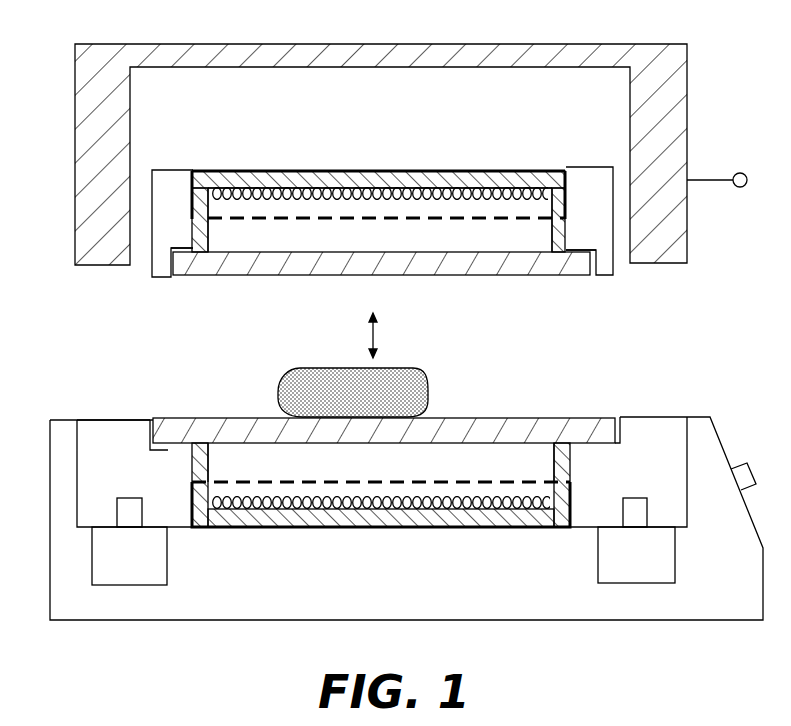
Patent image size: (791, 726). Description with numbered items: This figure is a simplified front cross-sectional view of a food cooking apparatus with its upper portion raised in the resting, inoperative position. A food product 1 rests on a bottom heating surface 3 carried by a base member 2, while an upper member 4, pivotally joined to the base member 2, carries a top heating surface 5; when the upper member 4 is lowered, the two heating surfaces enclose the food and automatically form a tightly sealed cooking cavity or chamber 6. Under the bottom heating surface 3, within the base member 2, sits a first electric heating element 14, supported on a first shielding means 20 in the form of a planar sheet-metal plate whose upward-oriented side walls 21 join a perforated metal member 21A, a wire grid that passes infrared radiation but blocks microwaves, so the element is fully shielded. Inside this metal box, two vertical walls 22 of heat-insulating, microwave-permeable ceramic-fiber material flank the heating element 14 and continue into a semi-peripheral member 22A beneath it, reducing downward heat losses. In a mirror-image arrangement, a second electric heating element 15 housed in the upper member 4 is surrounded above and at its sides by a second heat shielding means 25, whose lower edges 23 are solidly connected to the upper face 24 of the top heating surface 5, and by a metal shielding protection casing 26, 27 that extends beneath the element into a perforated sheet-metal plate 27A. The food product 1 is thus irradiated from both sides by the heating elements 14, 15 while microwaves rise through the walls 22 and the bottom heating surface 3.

The food product 1 is at (298, 385).
The base member 2 is at (103, 607).
The bottom heating surface 3 is at (257, 436).
The upper member 4 is at (632, 52).
The top heating surface 5 is at (530, 272).
The cooking cavity or chamber 6 is at (382, 335).
The first electric heating element 14 is at (303, 509).
The second electric heating element 15 is at (203, 170).
The first shielding means 20 is at (498, 533).
The side walls 21 is at (579, 493).
The perforated metal member 21A is at (456, 476).
The walls 22 is at (185, 460).
The semi-peripheral member 22A is at (420, 520).
The lower edges 23 is at (196, 243).
The upper face 24 is at (373, 247).
The second heat shielding means 25 is at (323, 172).
The metal shielding protection casing 26 is at (251, 168).
The metal shielding protection casing 27 is at (578, 184).
The perforated sheet-metal plate 27A is at (292, 222).